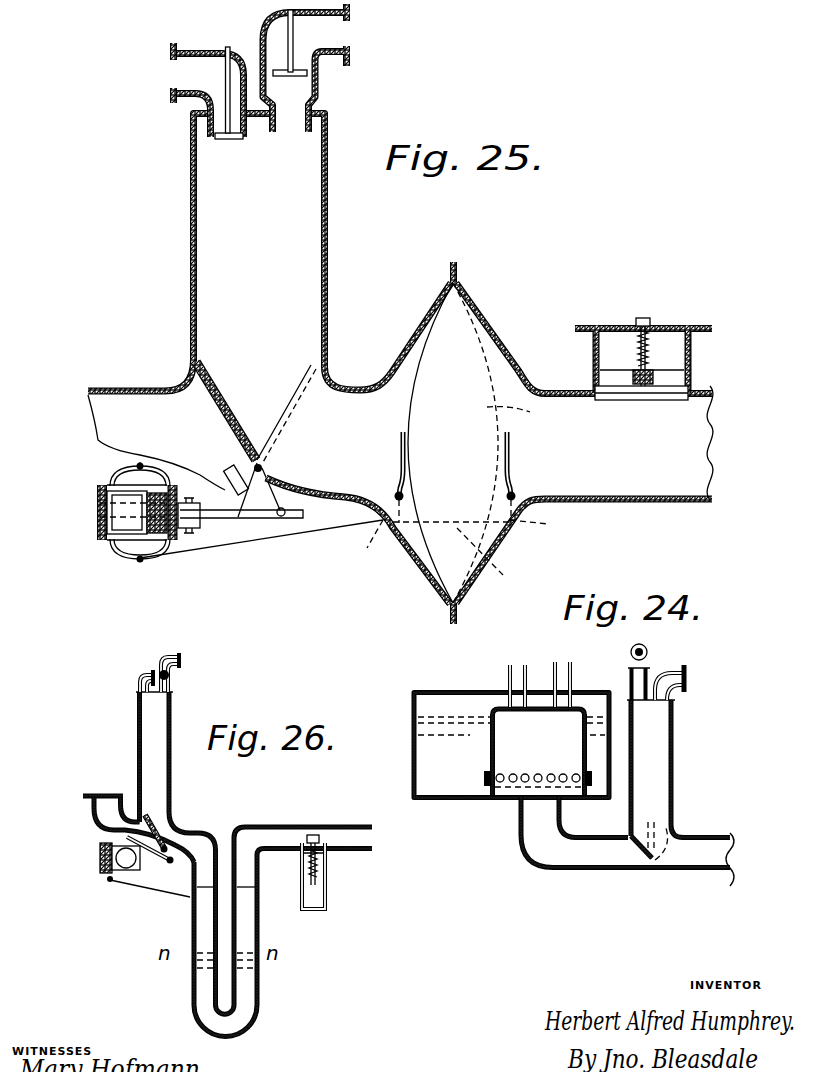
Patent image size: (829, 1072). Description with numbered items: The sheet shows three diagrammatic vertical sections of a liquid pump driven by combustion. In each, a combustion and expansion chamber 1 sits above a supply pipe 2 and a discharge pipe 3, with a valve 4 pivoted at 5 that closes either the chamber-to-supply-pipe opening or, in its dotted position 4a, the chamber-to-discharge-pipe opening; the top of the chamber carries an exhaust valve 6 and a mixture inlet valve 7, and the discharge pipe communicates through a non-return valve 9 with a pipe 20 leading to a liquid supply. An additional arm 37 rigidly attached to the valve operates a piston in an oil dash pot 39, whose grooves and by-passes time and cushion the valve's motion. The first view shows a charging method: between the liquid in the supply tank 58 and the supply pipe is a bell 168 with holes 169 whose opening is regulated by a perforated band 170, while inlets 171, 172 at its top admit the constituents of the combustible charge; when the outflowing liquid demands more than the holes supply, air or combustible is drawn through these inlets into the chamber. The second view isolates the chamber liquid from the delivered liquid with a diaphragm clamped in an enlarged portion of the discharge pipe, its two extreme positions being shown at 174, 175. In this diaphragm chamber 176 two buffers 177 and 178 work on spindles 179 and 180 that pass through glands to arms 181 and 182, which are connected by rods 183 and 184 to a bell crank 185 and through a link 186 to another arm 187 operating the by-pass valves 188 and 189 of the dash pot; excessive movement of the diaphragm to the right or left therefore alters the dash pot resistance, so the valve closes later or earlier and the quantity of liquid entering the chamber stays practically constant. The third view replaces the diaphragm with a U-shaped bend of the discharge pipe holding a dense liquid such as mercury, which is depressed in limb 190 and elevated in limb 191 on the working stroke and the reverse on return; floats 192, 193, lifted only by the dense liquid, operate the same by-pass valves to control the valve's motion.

In FIG. 25, the combustion and expansion chamber 1 is at (259, 241).
In FIG. 24, the combustion and expansion chamber 1 is at (655, 741).
In FIG. 26, the combustion and expansion chamber 1 is at (139, 731).
In FIG. 25, the supply pipe 2 is at (156, 425).
In FIG. 24, the supply pipe 2 is at (548, 817).
In FIG. 26, the supply pipe 2 is at (106, 797).
In FIG. 25, the discharge pipe 3 is at (525, 443).
In FIG. 24, the discharge pipe 3 is at (643, 859).
In FIG. 26, the discharge pipe 3 is at (265, 826).
In FIG. 25, the valve 4 is at (224, 405).
In FIG. 24, the valve 4 is at (650, 860).
In FIG. 26, the valve 4 is at (143, 835).
In FIG. 25, the dotted line position of valve 4a is at (292, 410).
In FIG. 25, the pivot 5 is at (250, 468).
In FIG. 25, the exhaust valve 6 is at (237, 140).
In FIG. 25, the mixture inlet valve 7 is at (300, 80).
In FIG. 25, the non-return valve 9 is at (632, 401).
In FIG. 26, the non-return valve 9 is at (318, 845).
In FIG. 25, the pipe 20 is at (612, 335).
In FIG. 26, the pipe 20 is at (320, 898).
In FIG. 25, the additional arm 37 is at (283, 479).
In FIG. 25, the oil dash pot 39 is at (118, 522).
In FIG. 24, the supply tank 58 is at (414, 772).
In FIG. 24, the bell 168 is at (539, 752).
In FIG. 24, the holes 169 is at (575, 775).
In FIG. 24, the perforated band 170 is at (484, 779).
In FIG. 24, the inlet 171 is at (508, 672).
In FIG. 24, the inlet 172 is at (561, 670).
In FIG. 25, the diaphragm extreme position 174 is at (413, 386).
In FIG. 25, the diaphragm extreme position 175 is at (526, 419).
In FIG. 25, the diaphragm chamber 176 is at (424, 323).
In FIG. 25, the buffer 177 is at (400, 450).
In FIG. 25, the buffer 178 is at (512, 445).
In FIG. 25, the spindle 179 is at (397, 493).
In FIG. 25, the spindle 180 is at (514, 492).
In FIG. 25, the arm 181 is at (371, 547).
In FIG. 25, the arm 182 is at (490, 524).
In FIG. 25, the rod 183 is at (504, 551).
In FIG. 25, the rod 184 is at (278, 538).
In FIG. 25, the bell crank 185 is at (140, 560).
In FIG. 26, the bell crank 185 is at (108, 877).
In FIG. 25, the link 186 is at (180, 535).
In FIG. 25, the arm 187 is at (145, 467).
In FIG. 25, the by-pass valve 188 is at (120, 552).
In FIG. 25, the by-pass valve 189 is at (112, 472).
In FIG. 26, the by-pass valve 189 is at (112, 838).
In FIG. 26, the limb 190 is at (200, 1003).
In FIG. 26, the limb 191 is at (248, 1000).
In FIG. 26, the float 192 is at (210, 888).
In FIG. 26, the float 193 is at (250, 888).